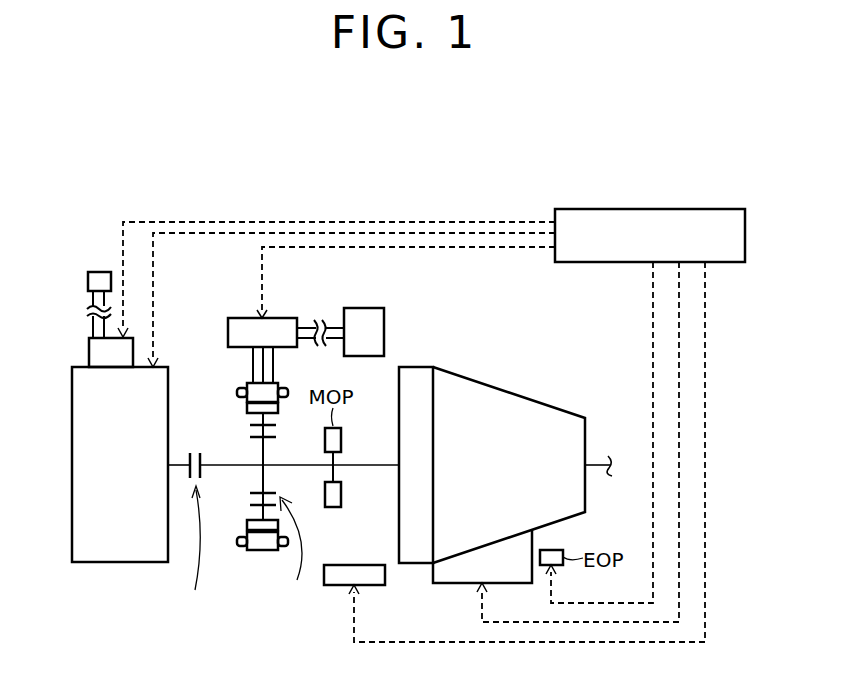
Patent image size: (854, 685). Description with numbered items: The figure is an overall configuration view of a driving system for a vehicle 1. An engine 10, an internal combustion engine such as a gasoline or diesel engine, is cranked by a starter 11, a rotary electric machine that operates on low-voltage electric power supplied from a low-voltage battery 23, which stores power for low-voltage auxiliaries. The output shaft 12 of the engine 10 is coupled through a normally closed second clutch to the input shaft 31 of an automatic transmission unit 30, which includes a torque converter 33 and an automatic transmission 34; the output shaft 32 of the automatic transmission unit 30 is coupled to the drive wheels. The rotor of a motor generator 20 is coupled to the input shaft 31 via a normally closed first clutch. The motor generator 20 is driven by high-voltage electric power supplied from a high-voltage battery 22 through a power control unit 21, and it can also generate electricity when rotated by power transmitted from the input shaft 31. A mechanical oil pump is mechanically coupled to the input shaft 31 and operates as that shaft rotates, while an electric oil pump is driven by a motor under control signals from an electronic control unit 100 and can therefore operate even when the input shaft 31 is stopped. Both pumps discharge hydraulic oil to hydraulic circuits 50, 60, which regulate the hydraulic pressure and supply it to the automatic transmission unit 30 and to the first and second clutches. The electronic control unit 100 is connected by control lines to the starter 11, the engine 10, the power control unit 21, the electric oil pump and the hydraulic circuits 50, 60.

The vehicle 1 is at (358, 155).
The engine 10 is at (120, 563).
The starter 11 is at (89, 355).
The output shaft 12 is at (188, 459).
The motor generator 20 is at (258, 553).
The power control unit 21 is at (228, 333).
The high-voltage battery 22 is at (363, 306).
The low-voltage battery 23 is at (88, 283).
The automatic transmission unit 30 is at (492, 426).
The input shaft 31 is at (229, 462).
The output shaft 32 is at (597, 462).
The torque converter 33 is at (417, 365).
The automatic transmission 34 is at (527, 395).
The hydraulic circuit 50 is at (440, 585).
The hydraulic circuit 60 is at (368, 563).
The electronic control unit 100 is at (700, 207).